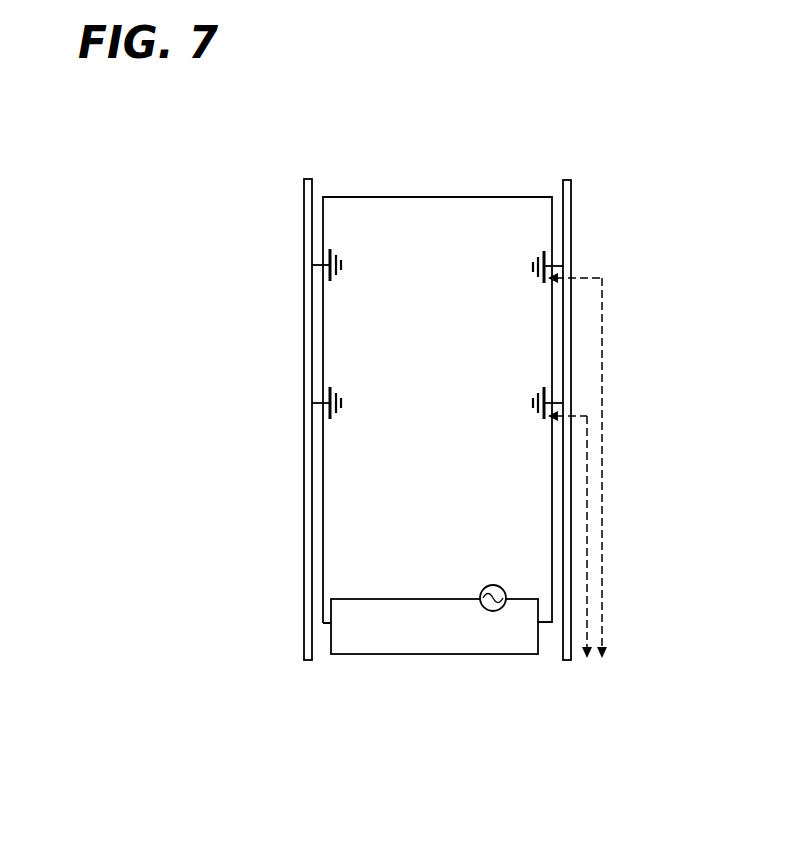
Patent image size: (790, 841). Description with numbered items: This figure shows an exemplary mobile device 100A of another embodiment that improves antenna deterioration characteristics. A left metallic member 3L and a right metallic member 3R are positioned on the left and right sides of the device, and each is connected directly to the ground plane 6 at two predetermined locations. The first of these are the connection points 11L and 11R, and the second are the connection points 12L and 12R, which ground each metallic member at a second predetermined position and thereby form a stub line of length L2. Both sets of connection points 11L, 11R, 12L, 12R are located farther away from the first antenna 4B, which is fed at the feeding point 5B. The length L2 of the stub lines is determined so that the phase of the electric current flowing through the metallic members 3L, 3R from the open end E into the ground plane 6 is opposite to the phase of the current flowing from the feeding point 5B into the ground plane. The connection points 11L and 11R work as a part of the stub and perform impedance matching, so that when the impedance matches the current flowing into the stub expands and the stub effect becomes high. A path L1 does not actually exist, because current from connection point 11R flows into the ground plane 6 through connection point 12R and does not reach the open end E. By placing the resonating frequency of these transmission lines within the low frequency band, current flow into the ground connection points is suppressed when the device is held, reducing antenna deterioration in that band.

The mobile device 100A is at (576, 121).
The ground plane 6 is at (417, 205).
The left metallic member 3L is at (307, 248).
The right metallic member 3R is at (572, 228).
The connection point 11L is at (330, 265).
The connection point 11R is at (546, 267).
The connection point 12L is at (330, 403).
The connection point 12R is at (546, 404).
The path L1 is at (602, 345).
The length of the stub line L2 is at (587, 557).
The open end E is at (306, 661).
The first antenna 4B is at (415, 656).
The feeding point 5B is at (497, 612).